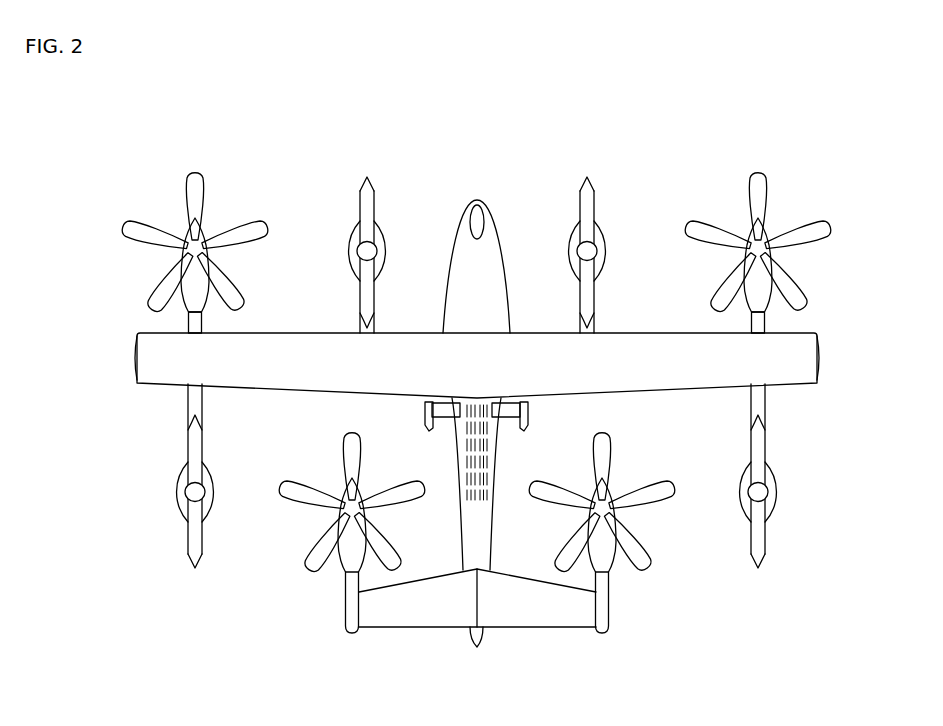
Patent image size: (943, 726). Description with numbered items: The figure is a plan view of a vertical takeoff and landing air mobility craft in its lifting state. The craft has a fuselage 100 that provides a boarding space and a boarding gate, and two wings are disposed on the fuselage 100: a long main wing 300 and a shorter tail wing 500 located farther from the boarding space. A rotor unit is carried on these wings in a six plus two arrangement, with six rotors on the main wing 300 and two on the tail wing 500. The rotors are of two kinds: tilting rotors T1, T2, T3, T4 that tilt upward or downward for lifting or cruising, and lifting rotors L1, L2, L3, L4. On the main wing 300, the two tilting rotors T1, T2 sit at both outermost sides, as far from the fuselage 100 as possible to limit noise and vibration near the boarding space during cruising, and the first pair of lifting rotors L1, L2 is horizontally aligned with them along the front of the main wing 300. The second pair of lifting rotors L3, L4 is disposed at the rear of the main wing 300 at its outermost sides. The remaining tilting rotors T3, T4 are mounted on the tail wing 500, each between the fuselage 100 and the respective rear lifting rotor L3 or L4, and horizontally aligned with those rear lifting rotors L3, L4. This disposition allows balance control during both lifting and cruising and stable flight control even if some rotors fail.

The fuselage 100 is at (465, 212).
The main wing 300 is at (152, 359).
The tail wing 500 is at (408, 617).
The tilting rotor T1 is at (815, 228).
The tilting rotor T2 is at (137, 226).
The tilting rotor T3 is at (645, 567).
The tilting rotor T4 is at (310, 565).
The lifting rotor L1 is at (591, 190).
The lifting rotor L2 is at (364, 188).
The lifting rotor L3 is at (760, 555).
The lifting rotor L4 is at (190, 547).